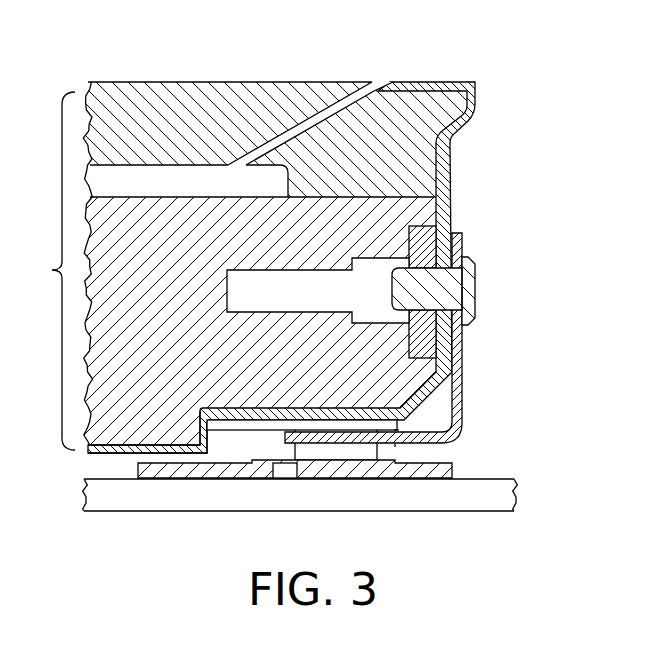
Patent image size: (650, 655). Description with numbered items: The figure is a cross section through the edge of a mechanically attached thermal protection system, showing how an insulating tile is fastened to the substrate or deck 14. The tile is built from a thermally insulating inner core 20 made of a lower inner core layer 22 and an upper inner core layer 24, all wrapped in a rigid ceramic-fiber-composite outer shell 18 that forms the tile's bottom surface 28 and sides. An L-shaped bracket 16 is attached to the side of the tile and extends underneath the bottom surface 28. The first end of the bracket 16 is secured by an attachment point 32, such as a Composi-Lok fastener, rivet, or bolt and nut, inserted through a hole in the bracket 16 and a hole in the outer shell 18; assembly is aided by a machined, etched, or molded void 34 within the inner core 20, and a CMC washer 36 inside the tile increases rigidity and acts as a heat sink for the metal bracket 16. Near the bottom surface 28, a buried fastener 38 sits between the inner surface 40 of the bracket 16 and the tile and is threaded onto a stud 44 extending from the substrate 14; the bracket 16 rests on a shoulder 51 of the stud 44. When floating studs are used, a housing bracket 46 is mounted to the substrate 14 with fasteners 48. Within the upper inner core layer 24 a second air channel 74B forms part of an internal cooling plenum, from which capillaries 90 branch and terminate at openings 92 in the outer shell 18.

The substrate 14 is at (492, 498).
The bracket 16 is at (462, 410).
The outer shell 18 is at (476, 96).
The inner core 20 is at (51, 271).
The lower inner core layer 22 is at (141, 327).
The upper inner core layer 24 is at (141, 136).
The bottom surface 28 is at (115, 463).
The attachment point 32 is at (465, 292).
The void 34 is at (287, 300).
The CMC washer 36 is at (422, 252).
The fastener 38 is at (390, 423).
The inner surface 40 is at (395, 420).
The threaded stud 44 is at (345, 455).
The housing bracket 46 is at (413, 474).
The fasteners 48 is at (285, 480).
The shoulder 51 is at (400, 449).
The second air channels 74B is at (185, 178).
The capillaries 90 is at (293, 134).
The openings 92 is at (374, 82).